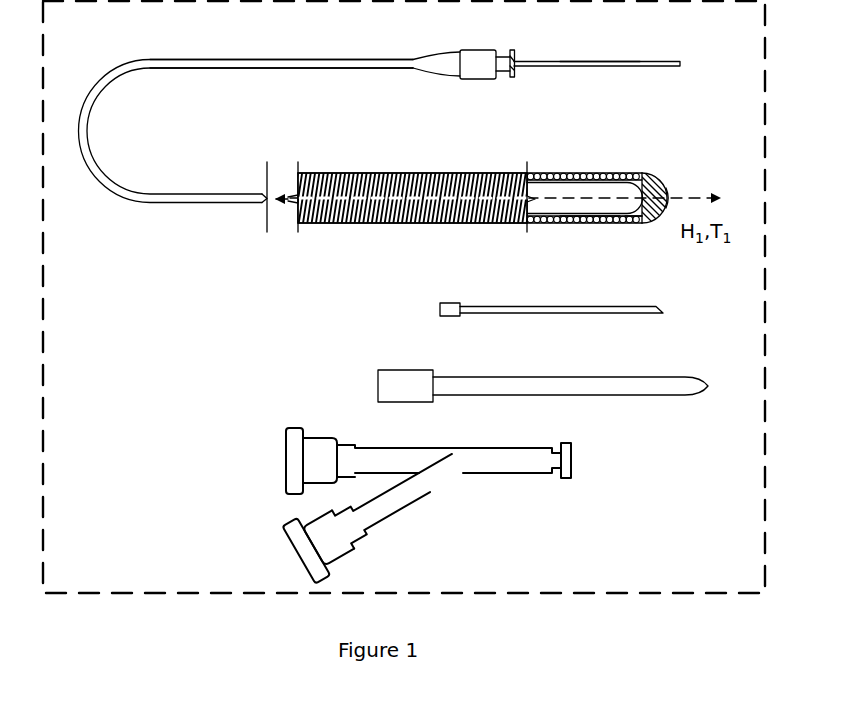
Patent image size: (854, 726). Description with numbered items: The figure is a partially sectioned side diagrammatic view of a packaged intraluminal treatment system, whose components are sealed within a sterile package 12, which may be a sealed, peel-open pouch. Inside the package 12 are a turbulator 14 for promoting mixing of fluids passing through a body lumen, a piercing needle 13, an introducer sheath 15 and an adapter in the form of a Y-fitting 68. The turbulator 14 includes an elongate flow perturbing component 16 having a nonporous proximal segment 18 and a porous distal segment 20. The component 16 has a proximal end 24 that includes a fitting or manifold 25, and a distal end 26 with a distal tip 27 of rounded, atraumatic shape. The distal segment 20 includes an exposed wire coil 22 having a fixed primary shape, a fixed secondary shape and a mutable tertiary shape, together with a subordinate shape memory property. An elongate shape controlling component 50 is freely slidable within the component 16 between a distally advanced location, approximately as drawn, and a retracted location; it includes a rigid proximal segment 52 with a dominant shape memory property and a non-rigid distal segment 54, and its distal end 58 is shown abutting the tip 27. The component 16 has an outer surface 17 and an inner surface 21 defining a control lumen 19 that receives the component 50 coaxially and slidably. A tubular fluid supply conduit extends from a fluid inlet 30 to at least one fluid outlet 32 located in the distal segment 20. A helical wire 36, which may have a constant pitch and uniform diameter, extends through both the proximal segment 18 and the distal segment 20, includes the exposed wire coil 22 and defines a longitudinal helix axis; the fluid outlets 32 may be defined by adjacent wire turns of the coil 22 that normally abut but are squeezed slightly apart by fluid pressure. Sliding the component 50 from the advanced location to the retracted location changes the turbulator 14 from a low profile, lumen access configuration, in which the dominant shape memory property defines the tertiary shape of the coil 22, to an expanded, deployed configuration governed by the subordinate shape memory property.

The sterile package 12 is at (765, 103).
The piercing needle 13 is at (610, 315).
The turbulator 14 is at (213, 242).
The introducer sheath 15 is at (610, 397).
The elongate flow perturbing component 16 is at (383, 70).
The outer surface 17 is at (608, 168).
The nonporous proximal segment 18 is at (203, 56).
The control lumen 19 is at (640, 225).
The porous distal segment 20 is at (337, 230).
The inner surface 21 is at (578, 187).
The exposed wire coil 22 is at (453, 225).
The proximal end 24 is at (510, 78).
The fitting or manifold 25 is at (477, 49).
The distal end 26 is at (650, 174).
The distal tip 27 is at (668, 190).
The fluid inlet 30 is at (514, 67).
The fluid outlet 32 is at (312, 166).
The helical wire 36 is at (572, 225).
The elongate shape controlling component 50 is at (528, 60).
The rigid proximal segment 52 is at (587, 61).
The non-rigid distal segment 54 is at (600, 225).
The distal end 58 is at (640, 172).
The Y-fitting 68 is at (416, 500).